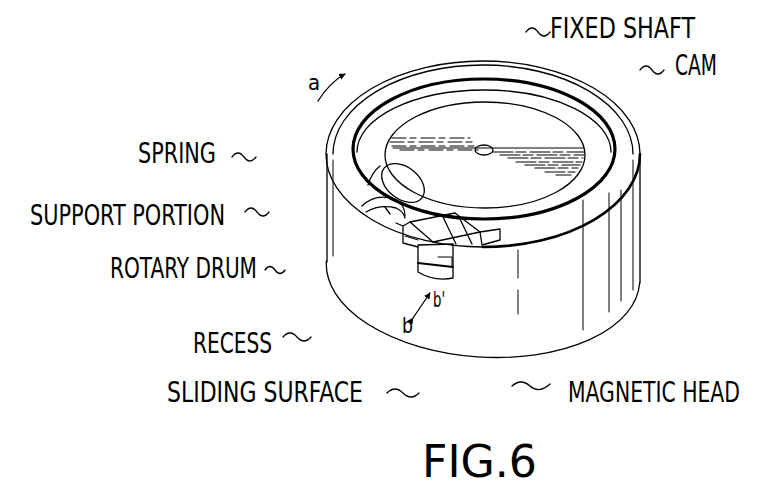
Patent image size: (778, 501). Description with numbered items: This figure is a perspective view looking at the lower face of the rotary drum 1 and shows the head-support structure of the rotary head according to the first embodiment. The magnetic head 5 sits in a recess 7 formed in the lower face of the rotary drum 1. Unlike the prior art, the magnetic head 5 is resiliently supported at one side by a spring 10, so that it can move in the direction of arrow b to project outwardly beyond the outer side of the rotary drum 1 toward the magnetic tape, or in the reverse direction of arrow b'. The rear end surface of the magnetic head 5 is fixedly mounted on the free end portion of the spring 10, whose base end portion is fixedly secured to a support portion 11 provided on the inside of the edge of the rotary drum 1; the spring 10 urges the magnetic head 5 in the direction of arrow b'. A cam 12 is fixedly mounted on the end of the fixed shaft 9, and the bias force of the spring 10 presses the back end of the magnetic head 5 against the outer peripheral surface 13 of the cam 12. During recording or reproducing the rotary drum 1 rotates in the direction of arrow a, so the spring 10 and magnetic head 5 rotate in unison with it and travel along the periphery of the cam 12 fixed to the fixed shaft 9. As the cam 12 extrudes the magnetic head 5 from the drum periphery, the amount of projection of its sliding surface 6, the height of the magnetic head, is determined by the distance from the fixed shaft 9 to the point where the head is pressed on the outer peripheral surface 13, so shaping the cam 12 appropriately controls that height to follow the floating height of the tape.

The rotary drum 1 is at (342, 257).
The magnetic head 5 is at (458, 272).
The sliding surface 6 is at (458, 281).
The recess 7 is at (411, 246).
The fixed shaft 9 is at (485, 145).
The spring 10 is at (388, 164).
The support portion 11 is at (372, 198).
The cam 12 is at (555, 128).
The outer peripheral surface 13 is at (590, 214).